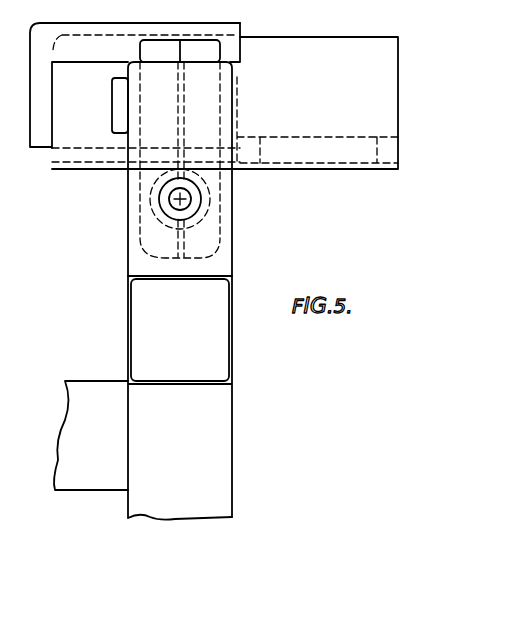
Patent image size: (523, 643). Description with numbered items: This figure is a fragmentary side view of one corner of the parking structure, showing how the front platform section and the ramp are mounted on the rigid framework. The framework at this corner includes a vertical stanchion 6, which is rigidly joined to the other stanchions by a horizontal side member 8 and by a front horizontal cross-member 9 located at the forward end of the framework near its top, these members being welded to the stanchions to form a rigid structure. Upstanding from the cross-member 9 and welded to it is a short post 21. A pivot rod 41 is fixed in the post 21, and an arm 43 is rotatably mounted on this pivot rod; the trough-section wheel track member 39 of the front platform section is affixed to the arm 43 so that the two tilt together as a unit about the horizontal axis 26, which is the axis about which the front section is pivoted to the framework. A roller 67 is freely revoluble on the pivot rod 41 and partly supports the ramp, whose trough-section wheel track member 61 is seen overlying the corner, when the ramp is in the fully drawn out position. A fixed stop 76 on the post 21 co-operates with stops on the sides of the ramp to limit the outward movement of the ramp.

The vertical stanchion 6 is at (210, 478).
The horizontal side member 8 is at (95, 483).
The front horizontal cross-member 9 is at (128, 337).
The short post 21 is at (220, 267).
The horizontal axis 26 is at (176, 202).
The trough-section member 39 is at (45, 135).
The pivot rod 41 is at (184, 205).
The arm 43 is at (220, 78).
The wheel track member 61 is at (325, 155).
The roller 67 is at (212, 205).
The fixed stop 76 is at (112, 115).